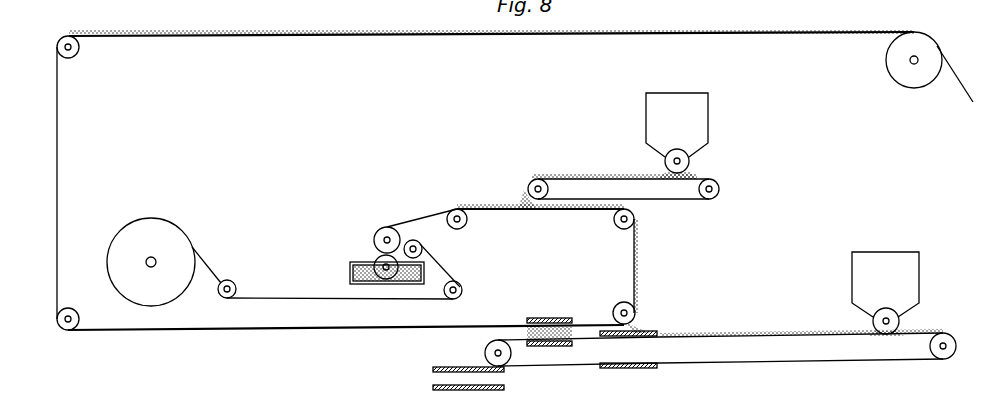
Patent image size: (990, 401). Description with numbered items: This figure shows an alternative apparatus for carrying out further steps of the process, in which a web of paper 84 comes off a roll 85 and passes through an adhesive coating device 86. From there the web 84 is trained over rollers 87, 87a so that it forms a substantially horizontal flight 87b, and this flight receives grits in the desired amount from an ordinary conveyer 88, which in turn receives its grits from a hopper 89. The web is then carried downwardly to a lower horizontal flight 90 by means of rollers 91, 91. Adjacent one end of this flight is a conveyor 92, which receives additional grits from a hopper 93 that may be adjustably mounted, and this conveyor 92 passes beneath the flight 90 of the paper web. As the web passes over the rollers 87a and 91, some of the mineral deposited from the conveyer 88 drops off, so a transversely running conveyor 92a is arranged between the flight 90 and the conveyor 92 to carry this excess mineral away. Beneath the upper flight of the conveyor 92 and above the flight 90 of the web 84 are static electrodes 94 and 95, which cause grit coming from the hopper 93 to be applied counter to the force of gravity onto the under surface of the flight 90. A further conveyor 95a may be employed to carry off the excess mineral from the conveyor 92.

The web of paper 84 is at (208, 272).
The roll 85 is at (183, 242).
The adhesive coating device 86 is at (376, 251).
The roller 87 is at (468, 223).
The roller 87a is at (620, 228).
The horizontal flight 87b is at (583, 209).
The conveyer 88 is at (697, 178).
The hopper 89 is at (697, 125).
The horizontal flight 90 is at (434, 327).
The rollers 91 is at (79, 315).
The conveyor 92 is at (920, 334).
The transversely running conveyor 92a is at (648, 331).
The hopper 93 is at (912, 284).
The static electrode 94 is at (553, 309).
The static electrode 95 is at (553, 346).
The conveyor 95a is at (447, 378).